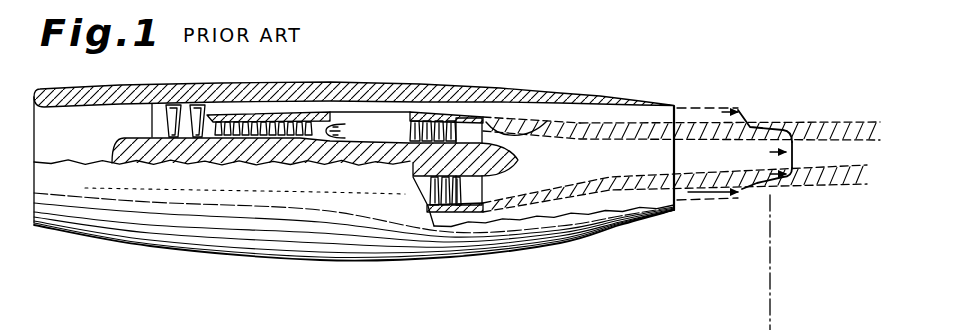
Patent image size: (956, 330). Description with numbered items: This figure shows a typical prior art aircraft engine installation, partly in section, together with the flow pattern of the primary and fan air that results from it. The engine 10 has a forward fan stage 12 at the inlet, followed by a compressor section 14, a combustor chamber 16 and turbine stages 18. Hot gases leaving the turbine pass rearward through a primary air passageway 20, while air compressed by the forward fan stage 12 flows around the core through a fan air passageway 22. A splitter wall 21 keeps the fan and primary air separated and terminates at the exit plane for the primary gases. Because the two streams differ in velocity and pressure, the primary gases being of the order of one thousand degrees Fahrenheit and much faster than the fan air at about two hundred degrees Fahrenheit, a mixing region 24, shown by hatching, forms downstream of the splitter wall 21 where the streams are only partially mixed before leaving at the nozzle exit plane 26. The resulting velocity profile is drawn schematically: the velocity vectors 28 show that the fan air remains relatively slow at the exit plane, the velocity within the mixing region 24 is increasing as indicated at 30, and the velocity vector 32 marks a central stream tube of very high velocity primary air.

The engine 10 is at (362, 85).
The forward fan stage 12 is at (207, 110).
The compressor section 14 is at (265, 130).
The combustor chamber 16 is at (370, 130).
The turbine stages 18 is at (481, 117).
The primary air passageway 20 is at (547, 121).
The splitter wall 21 is at (500, 115).
The fan air passageway 22 is at (462, 102).
The mixing region 24 is at (627, 130).
The nozzle exit plane 26 is at (677, 110).
The velocity vectors 28 is at (733, 104).
The velocity vectors in mixing region 30 is at (748, 127).
The velocity vector of primary air 32 is at (797, 132).